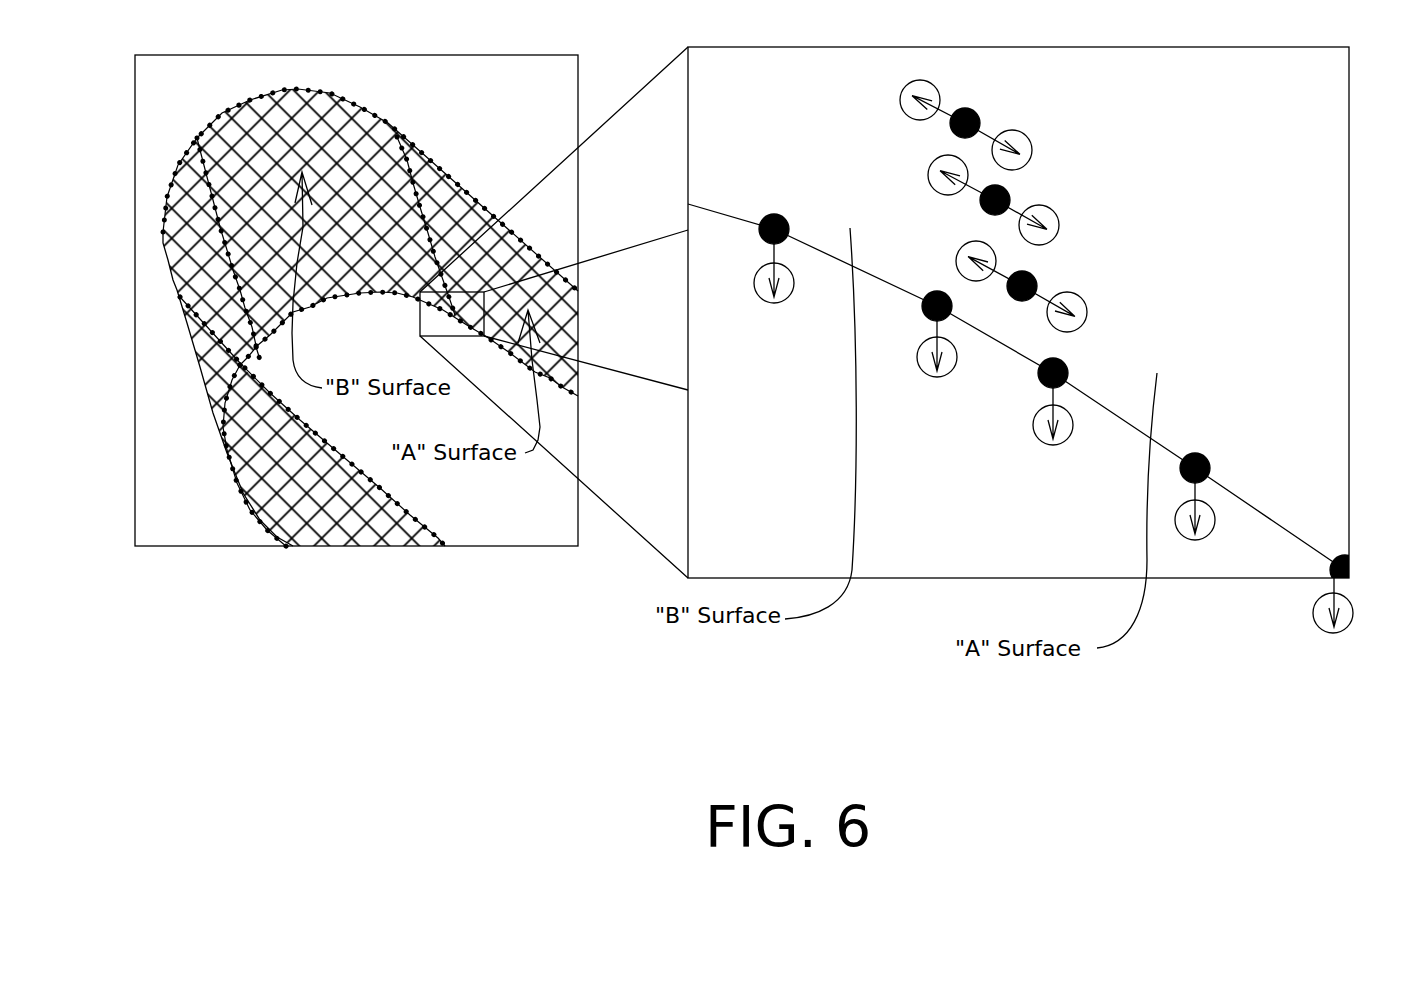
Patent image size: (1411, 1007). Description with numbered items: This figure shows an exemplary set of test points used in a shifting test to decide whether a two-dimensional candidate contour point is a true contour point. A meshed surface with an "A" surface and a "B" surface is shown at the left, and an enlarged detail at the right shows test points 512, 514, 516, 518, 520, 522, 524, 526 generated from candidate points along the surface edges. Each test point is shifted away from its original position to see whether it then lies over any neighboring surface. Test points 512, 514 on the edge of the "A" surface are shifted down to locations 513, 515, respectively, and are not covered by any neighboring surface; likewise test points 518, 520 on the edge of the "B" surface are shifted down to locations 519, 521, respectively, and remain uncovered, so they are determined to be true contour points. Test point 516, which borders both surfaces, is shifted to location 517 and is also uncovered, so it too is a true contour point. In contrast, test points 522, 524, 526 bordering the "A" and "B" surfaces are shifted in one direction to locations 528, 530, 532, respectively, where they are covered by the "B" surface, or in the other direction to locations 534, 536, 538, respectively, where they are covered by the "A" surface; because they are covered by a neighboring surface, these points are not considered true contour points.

The test point 512 is at (1338, 556).
The shifted location 513 is at (1345, 632).
The test point 514 is at (1205, 455).
The shifted location 515 is at (1205, 538).
The test point 516 is at (1065, 365).
The shifted location 517 is at (1048, 445).
The test point 518 is at (923, 307).
The shifted location 519 is at (930, 377).
The test point 520 is at (775, 214).
The shifted location 521 is at (770, 303).
The test point 522 is at (967, 108).
The test point 524 is at (1007, 190).
The test point 526 is at (1035, 276).
The shifted location 528 is at (905, 92).
The shifted location 530 is at (930, 172).
The shifted location 532 is at (958, 256).
The shifted location 534 is at (1030, 145).
The shifted location 536 is at (1058, 218).
The shifted location 538 is at (1087, 305).